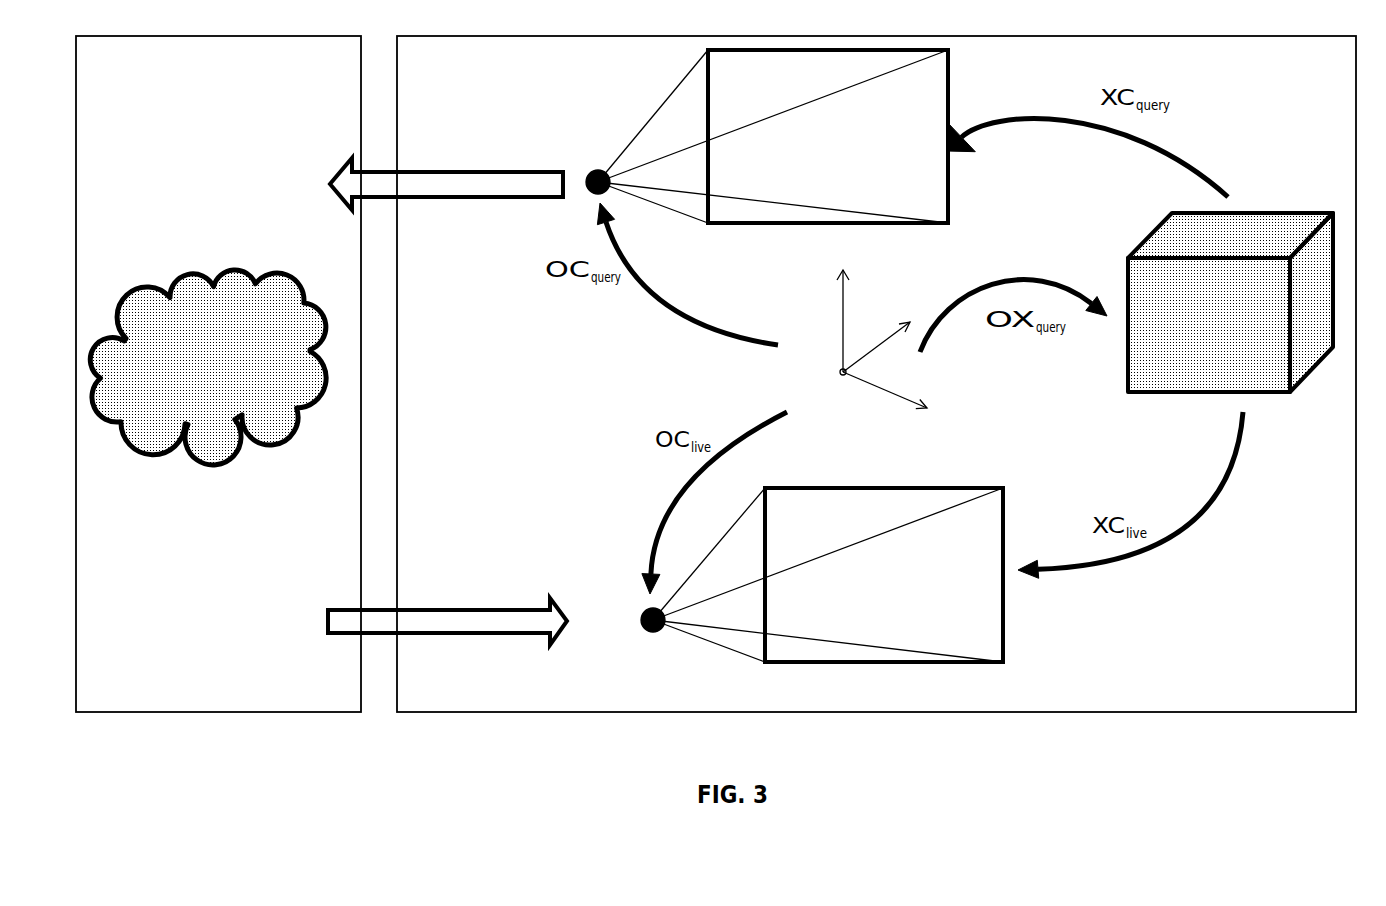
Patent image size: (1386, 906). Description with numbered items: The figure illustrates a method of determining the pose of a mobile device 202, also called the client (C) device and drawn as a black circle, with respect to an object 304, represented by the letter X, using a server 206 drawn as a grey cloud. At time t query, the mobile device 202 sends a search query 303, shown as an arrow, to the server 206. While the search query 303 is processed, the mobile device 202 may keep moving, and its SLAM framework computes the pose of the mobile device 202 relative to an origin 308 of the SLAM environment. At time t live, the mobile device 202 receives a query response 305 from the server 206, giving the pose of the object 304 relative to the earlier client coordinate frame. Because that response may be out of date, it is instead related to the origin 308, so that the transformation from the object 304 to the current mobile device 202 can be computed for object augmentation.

The mobile device 202 is at (592, 197).
The server 206 is at (222, 466).
The search query 303 is at (407, 199).
The object 304 is at (1188, 393).
The query response 305 is at (487, 632).
The origin 308 is at (843, 375).